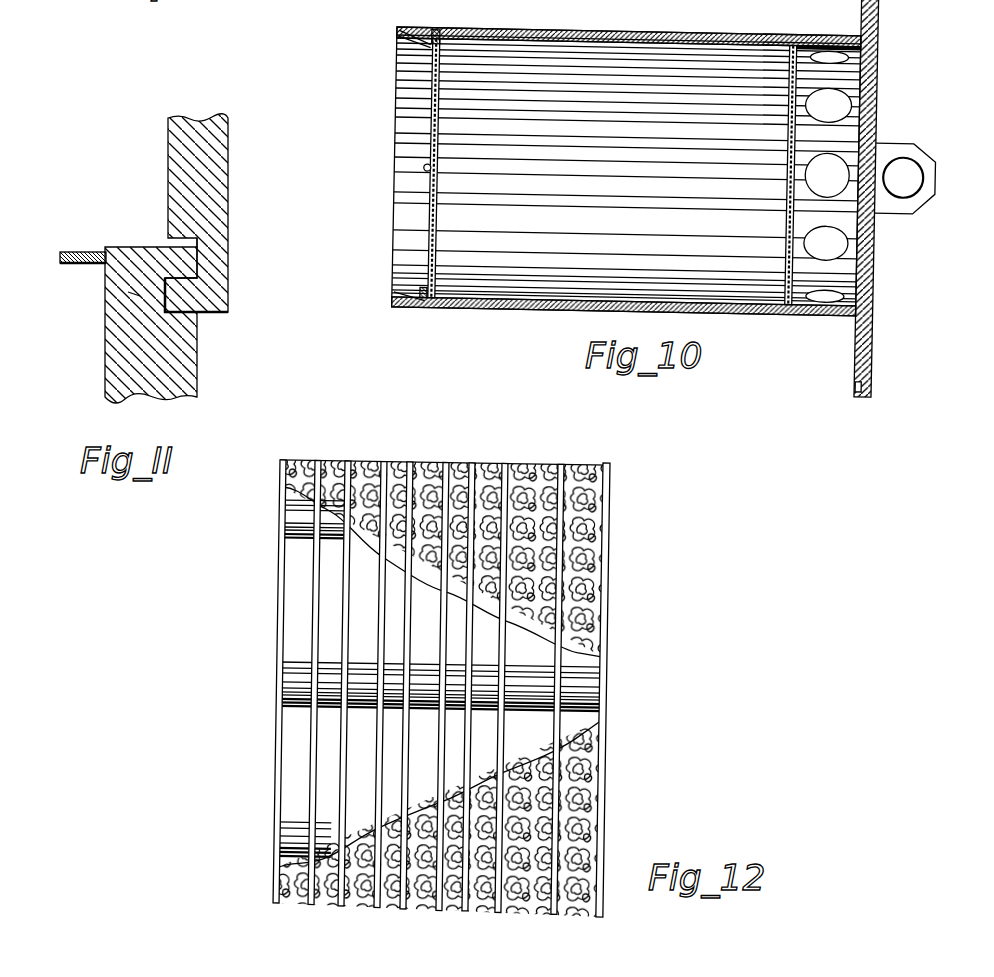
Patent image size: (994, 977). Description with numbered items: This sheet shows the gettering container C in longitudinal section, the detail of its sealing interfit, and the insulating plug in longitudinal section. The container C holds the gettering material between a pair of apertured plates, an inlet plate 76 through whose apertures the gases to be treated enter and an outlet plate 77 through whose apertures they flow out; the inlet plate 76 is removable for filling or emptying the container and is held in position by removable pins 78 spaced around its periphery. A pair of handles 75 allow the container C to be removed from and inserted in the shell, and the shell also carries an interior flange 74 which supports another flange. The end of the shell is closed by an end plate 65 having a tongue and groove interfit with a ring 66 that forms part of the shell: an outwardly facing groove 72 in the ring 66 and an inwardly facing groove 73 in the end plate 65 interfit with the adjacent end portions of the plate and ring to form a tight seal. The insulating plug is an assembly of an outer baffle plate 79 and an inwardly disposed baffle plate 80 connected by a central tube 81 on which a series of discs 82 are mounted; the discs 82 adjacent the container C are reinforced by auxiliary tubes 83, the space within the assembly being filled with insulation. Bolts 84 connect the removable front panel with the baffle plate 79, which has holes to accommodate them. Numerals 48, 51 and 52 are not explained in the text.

In FIG. 10, the plate 48 is at (392, 0).
In FIG. 11, the plate 48 is at (74, 250).
In FIG. 10, the openings 51 is at (848, 112).
In FIG. 10, the end wall 52 is at (596, 42).
In FIG. 10, the end plate 65 is at (878, 268).
In FIG. 11, the end plate 65 is at (214, 202).
In FIG. 11, the ring 66 is at (106, 342).
In FIG. 11, the outwardly facing groove 72 is at (128, 292).
In FIG. 10, the inwardly facing groove 73 is at (858, 386).
In FIG. 11, the inwardly facing groove 73 is at (205, 238).
In FIG. 10, the interior flange 74 is at (160, 4).
In FIG. 10, the handles 75 is at (935, 119).
In FIG. 10, the inlet plate 76 is at (443, 121).
In FIG. 10, the outlet plate 77 is at (789, 130).
In FIG. 10, the removable pins 78 is at (432, 40).
In FIG. 12, the outer baffle plate 79 is at (611, 602).
In FIG. 12, the inwardly disposed baffle plate 80 is at (345, 462).
In FIG. 12, the central tube 81 is at (540, 674).
In FIG. 12, the discs 82 is at (297, 462).
In FIG. 12, the auxiliary tubes 83 is at (296, 536).
In FIG. 12, the bolts 84 is at (611, 546).
In FIG. 10, the container C is at (803, 24).